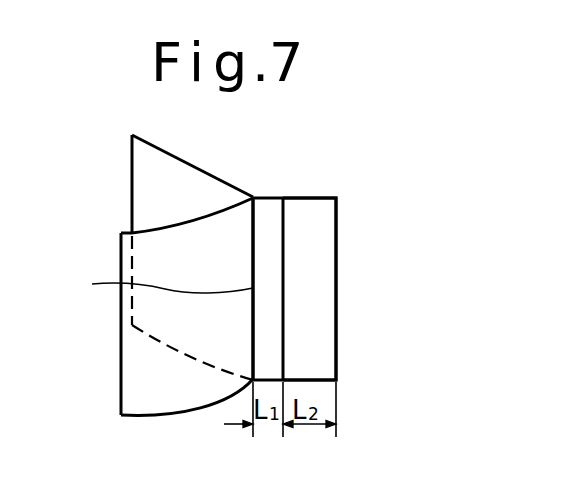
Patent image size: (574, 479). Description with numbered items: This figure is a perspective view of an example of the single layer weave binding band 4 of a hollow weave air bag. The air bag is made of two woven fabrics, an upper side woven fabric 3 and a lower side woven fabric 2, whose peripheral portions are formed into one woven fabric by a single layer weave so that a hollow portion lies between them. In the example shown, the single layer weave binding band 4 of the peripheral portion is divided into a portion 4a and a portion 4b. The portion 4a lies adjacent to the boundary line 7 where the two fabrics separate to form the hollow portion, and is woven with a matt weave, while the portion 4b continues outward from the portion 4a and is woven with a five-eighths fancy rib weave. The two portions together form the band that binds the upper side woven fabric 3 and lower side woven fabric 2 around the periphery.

The lower side woven fabric 2 is at (192, 174).
The upper side woven fabric 3 is at (161, 403).
The single layer weave binding band 4 is at (327, 180).
The portion adjacent to the boundary line 4a is at (267, 215).
The portion continuing to the portion 4a 4b is at (325, 218).
The boundary line 7 is at (165, 283).